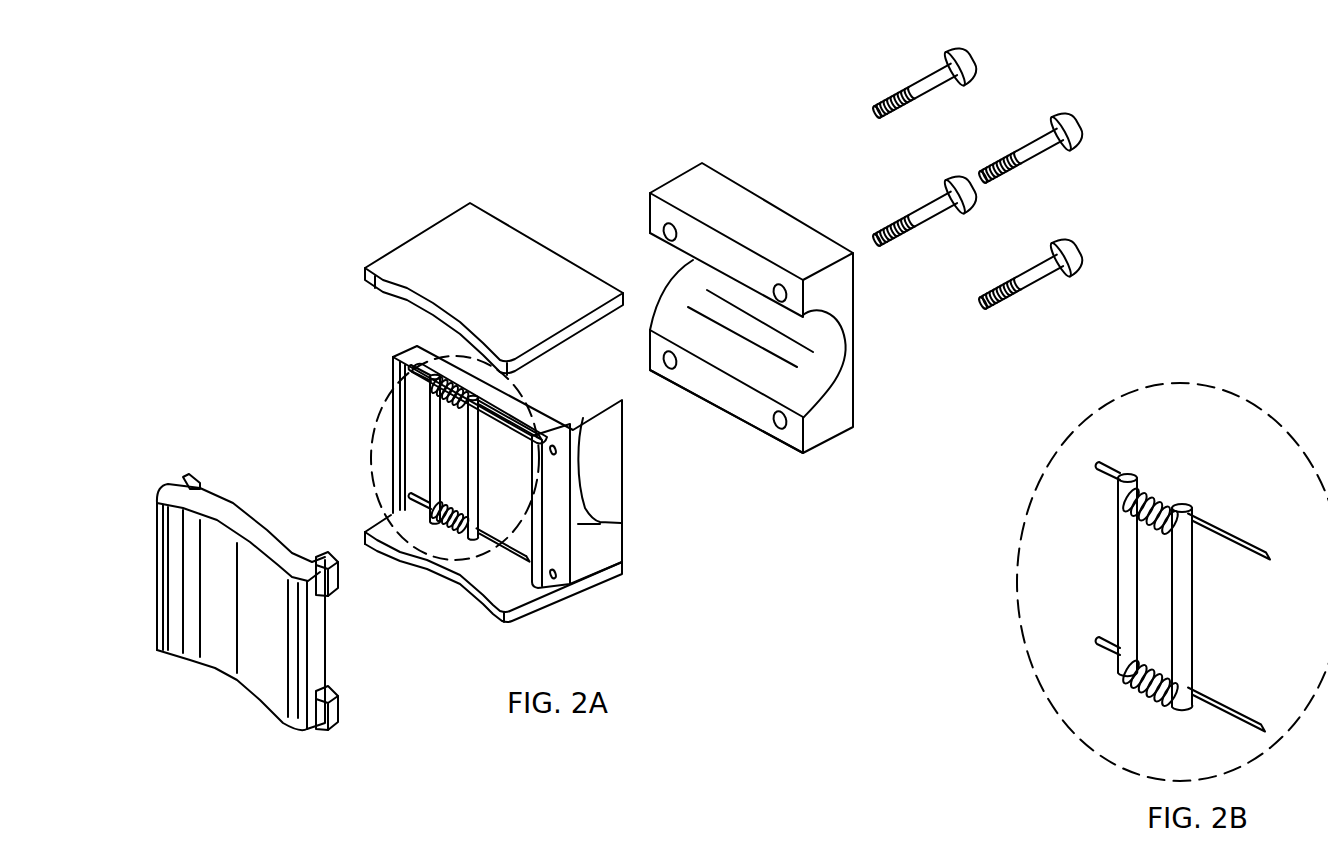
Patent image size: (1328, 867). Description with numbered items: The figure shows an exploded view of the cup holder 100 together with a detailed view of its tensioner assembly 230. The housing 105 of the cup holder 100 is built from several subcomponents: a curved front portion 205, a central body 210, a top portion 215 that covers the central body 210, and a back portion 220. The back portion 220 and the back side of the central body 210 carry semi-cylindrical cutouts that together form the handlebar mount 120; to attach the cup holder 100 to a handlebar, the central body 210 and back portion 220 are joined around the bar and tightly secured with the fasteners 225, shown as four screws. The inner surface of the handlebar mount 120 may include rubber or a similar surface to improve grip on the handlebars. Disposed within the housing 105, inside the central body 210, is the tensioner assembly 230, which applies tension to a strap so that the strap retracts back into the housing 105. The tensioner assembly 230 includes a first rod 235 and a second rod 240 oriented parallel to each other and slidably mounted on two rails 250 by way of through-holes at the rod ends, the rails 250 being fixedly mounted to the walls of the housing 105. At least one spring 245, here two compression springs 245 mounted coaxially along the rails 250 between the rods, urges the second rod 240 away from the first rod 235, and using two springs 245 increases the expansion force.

In FIG. 2A, the cup holder 100 is at (222, 137).
In FIG. 2A, the housing 105 is at (394, 340).
In FIG. 2A, the handlebar mount 120 is at (683, 286).
In FIG. 2A, the front portion 205 is at (232, 678).
In FIG. 2A, the central body 210 is at (577, 602).
In FIG. 2A, the top portion 215 is at (423, 228).
In FIG. 2A, the back portion 220 is at (841, 433).
In FIG. 2A, the fasteners 225 is at (1037, 287).
In FIG. 2A, the tensioner assembly 230 is at (376, 438).
In FIG. 2B, the tensioner assembly 230 is at (1080, 432).
In FIG. 2B, the first rod 235 is at (1117, 580).
In FIG. 2B, the second rod 240 is at (1193, 598).
In FIG. 2B, the spring 245 is at (1157, 493).
In FIG. 2B, the rails 250 is at (1247, 538).